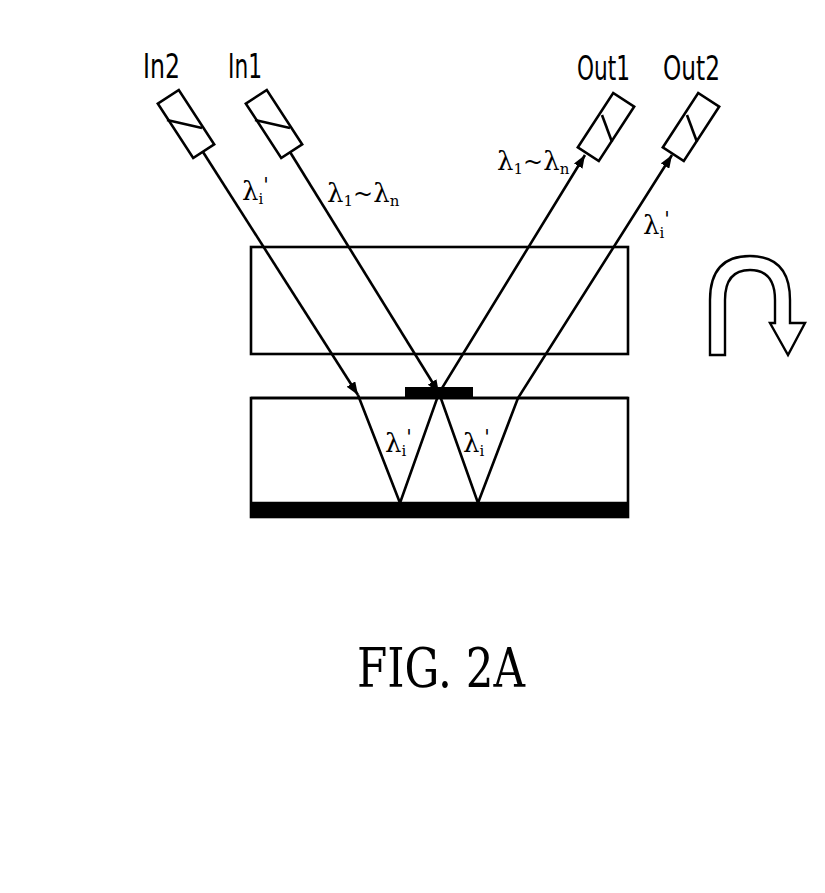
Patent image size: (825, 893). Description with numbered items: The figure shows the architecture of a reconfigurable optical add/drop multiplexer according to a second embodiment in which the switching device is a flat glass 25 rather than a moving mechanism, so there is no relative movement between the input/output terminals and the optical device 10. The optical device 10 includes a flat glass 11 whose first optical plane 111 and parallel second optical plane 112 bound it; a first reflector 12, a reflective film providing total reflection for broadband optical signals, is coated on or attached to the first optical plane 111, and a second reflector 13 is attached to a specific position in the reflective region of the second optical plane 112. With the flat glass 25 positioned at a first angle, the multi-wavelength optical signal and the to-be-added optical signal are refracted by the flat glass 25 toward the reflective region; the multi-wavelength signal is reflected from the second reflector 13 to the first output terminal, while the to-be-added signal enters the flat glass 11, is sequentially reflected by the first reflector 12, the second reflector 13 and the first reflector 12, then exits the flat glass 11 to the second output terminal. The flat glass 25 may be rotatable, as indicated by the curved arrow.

The optical device 10 is at (158, 353).
The flat glass 11 is at (257, 448).
The first reflector 12 is at (277, 514).
The second reflector 13 is at (404, 390).
The flat glass 25 is at (257, 292).
The first optical plane 111 is at (600, 504).
The second optical plane 112 is at (600, 398).